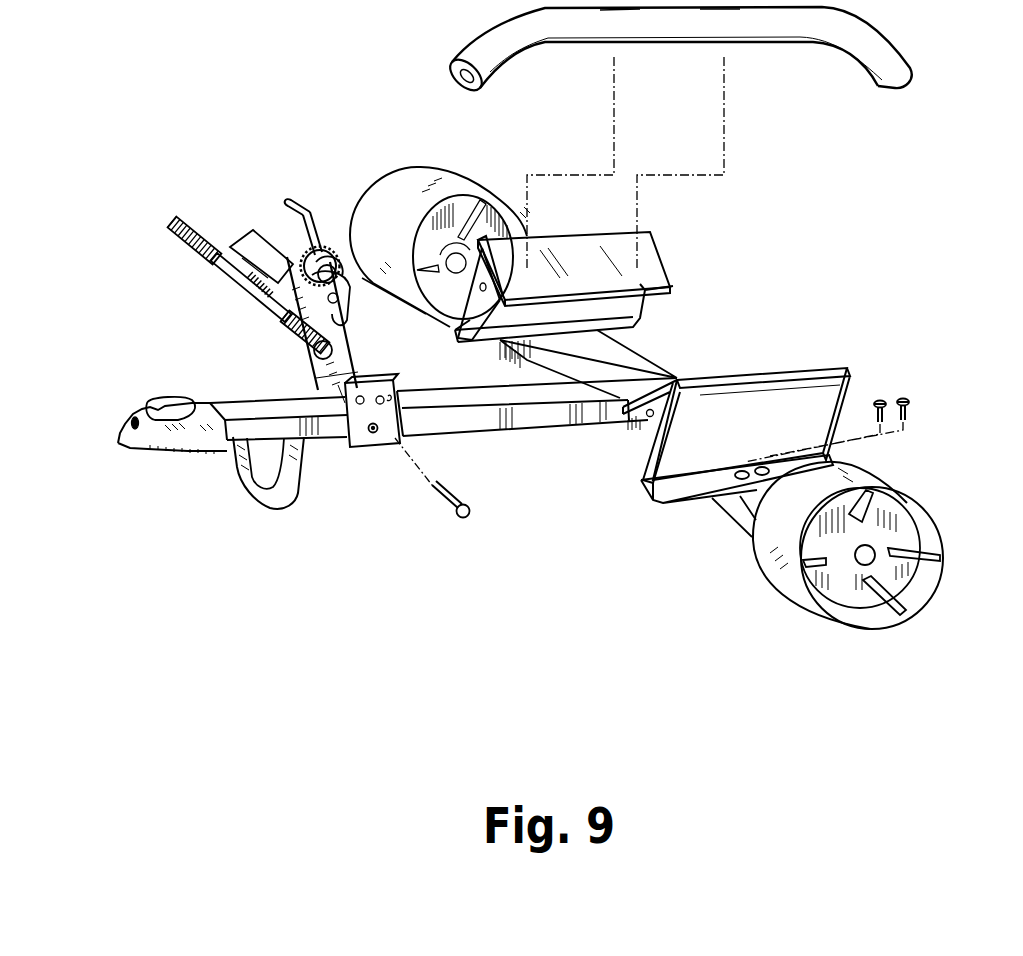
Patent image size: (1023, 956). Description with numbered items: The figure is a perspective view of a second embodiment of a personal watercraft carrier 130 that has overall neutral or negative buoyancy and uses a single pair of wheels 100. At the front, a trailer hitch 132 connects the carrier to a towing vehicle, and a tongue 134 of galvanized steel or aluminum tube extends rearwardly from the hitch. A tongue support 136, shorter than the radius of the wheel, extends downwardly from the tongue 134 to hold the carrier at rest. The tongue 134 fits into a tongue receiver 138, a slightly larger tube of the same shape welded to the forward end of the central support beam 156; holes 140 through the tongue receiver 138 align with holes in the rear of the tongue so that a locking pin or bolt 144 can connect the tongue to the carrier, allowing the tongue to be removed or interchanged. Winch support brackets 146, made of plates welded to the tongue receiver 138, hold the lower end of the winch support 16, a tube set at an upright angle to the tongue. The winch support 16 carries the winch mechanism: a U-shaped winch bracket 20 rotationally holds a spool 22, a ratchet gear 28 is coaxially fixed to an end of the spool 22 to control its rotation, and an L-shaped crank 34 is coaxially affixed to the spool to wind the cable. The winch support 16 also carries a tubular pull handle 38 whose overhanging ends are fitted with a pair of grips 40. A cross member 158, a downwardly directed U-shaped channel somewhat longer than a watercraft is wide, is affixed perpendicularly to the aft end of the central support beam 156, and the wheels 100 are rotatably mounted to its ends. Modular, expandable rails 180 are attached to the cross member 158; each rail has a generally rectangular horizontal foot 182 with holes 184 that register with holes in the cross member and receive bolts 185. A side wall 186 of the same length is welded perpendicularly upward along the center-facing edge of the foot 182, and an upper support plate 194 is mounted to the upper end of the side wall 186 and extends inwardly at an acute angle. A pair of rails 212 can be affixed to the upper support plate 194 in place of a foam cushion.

The winch support 16 is at (310, 353).
The winch bracket 20 is at (335, 312).
The spool 22 is at (345, 282).
The ratchet gear 28 is at (323, 250).
The crank 34 is at (302, 238).
The pull handle 38 is at (213, 262).
The grips 40 is at (176, 223).
The wheels 100 is at (855, 484).
The personal watercraft carrier 130 is at (532, 734).
The trailer hitch 132 is at (140, 450).
The tongue 134 is at (233, 447).
The tongue support 136 is at (270, 513).
The tongue receiver 138 is at (361, 432).
The holes 140 is at (375, 432).
The locking pin or bolt 144 is at (468, 516).
The winch support brackets 146 is at (403, 410).
The central support beam 156 is at (552, 415).
The cross member 158 is at (633, 368).
The rails 180 is at (816, 468).
The horizontal foot 182 is at (698, 485).
The holes 184 is at (740, 472).
The bolts 185 is at (850, 370).
The side wall 186 is at (732, 434).
The upper support plate 194 is at (647, 263).
The rails 212 is at (884, 74).